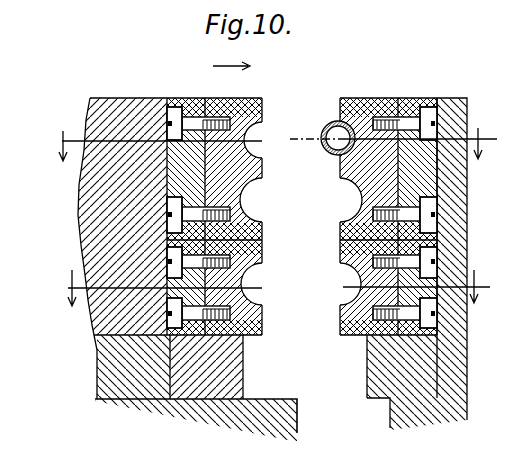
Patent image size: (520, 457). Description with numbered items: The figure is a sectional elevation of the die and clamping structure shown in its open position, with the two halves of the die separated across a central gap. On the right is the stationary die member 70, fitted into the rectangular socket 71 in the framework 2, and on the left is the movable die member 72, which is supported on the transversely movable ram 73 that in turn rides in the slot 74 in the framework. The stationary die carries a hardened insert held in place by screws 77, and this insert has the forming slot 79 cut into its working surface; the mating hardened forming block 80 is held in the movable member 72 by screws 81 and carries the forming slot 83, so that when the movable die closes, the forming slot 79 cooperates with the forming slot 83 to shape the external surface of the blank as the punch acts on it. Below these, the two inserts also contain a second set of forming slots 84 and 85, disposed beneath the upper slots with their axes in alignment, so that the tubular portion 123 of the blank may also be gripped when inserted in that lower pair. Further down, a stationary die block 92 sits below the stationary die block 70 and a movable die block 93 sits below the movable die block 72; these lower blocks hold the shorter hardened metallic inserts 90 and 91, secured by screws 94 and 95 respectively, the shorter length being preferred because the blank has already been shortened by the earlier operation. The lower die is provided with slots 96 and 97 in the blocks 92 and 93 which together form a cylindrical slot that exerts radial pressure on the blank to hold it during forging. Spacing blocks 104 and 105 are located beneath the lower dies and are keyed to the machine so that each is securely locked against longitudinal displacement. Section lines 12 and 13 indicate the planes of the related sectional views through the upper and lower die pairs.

The body 2 is at (452, 115).
The section line 12- 12 is at (279, 144).
The section line 13- 13 is at (274, 288).
The stationary die member 70 is at (373, 98).
The rectangular socket 71 is at (427, 98).
The movable die member 72 is at (205, 110).
The transversely movable ram 73 is at (108, 380).
The slot 74 is at (272, 398).
The screws 77 is at (432, 124).
The forming slot 79 is at (331, 122).
The hardened forming block 80 is at (262, 112).
The screws 81 is at (181, 114).
The forming slot 83 is at (249, 155).
The forming slot 84 is at (257, 213).
The forming slot 85 is at (366, 222).
The hardened metallic insert 90 is at (365, 322).
The hardened metallic insert 91 is at (250, 337).
The stationary die block 92 is at (421, 287).
The movable die block 93 is at (168, 340).
The screws 94 is at (431, 256).
The screws 95 is at (170, 258).
The slot 96 is at (345, 298).
The slot 97 is at (256, 297).
The spacing block 104 is at (384, 374).
The spacing block 105 is at (230, 378).
The tubular portion 123 is at (330, 150).